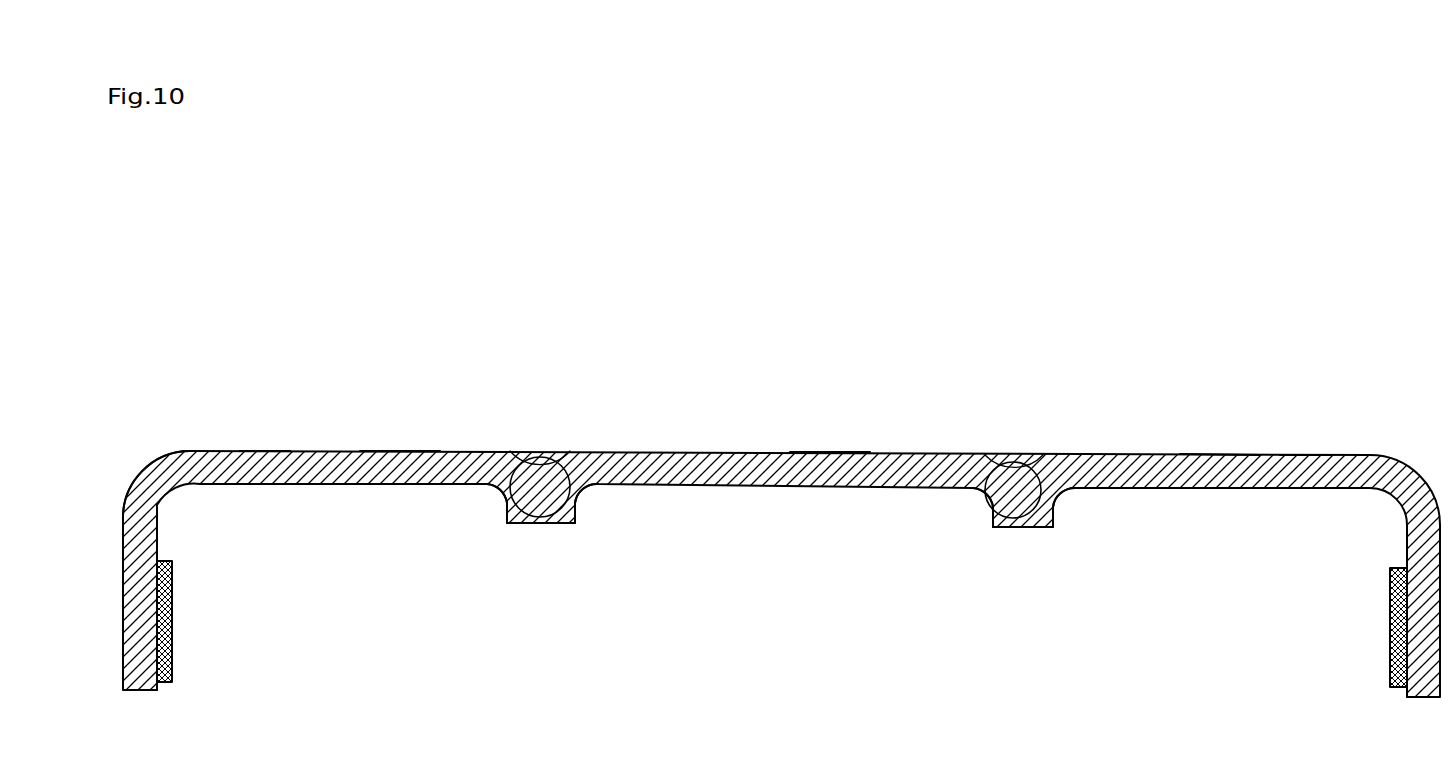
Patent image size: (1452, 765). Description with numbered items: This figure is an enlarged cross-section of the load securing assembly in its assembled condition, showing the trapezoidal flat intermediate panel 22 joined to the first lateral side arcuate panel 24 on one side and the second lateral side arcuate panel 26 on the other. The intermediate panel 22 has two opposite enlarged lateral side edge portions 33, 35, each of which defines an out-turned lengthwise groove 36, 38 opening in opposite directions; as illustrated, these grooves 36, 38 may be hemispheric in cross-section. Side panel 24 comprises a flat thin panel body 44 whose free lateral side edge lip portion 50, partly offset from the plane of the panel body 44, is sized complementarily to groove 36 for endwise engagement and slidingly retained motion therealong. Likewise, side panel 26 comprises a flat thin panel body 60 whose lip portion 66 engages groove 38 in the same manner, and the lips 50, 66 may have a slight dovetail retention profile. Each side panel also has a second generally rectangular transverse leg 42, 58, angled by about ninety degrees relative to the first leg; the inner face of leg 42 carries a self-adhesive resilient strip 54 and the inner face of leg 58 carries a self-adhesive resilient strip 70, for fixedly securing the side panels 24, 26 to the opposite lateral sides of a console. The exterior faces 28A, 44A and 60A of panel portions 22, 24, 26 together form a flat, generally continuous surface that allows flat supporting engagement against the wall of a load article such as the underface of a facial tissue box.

The intermediate panel 22 is at (780, 441).
The first lateral side trapezoidal arcuate panel 24 is at (265, 440).
The second lateral side trapezoidal arcuate panel 26 is at (1297, 443).
The outer face of panel body 28A is at (828, 452).
The enlarged lateral side edge portion 33 is at (566, 520).
The enlarged lateral side edge portion 35 is at (990, 514).
The out-turned lengthwise groove 36 is at (561, 451).
The out-turned lengthwise groove 38 is at (1025, 454).
The second generally rectangular leg 42 is at (158, 528).
The flat thin panel body 44 is at (398, 451).
The exterior face 44A is at (206, 451).
The free lateral side edge lip portion 50 is at (553, 473).
The self-adhesive resilient strip 54 is at (172, 620).
The second generally rectangular leg 58 is at (1407, 527).
The flat thin panel body 60 is at (1168, 488).
The exterior face 60A is at (1218, 455).
The free lateral side edge lip portion 66 is at (1022, 490).
The self-adhesive resilient strip 70 is at (1390, 622).